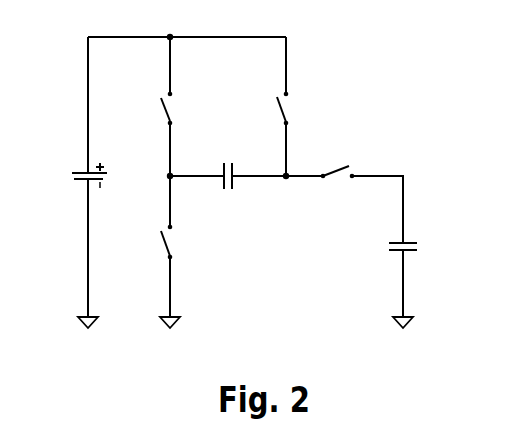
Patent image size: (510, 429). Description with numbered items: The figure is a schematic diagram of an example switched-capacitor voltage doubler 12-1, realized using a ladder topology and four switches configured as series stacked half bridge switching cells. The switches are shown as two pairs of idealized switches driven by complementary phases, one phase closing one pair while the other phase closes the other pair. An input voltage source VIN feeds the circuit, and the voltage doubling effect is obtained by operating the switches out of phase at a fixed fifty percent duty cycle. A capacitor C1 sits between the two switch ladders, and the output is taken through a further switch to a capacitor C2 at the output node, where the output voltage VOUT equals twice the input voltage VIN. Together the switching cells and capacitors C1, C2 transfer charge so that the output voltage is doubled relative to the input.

The switched-capacitor voltage doubler 12-1 is at (348, 71).
The flying capacitor C1 is at (229, 189).
The output capacitor C2 is at (421, 243).
The input voltage source VIN is at (75, 175).
The output voltage node VOUT is at (418, 162).